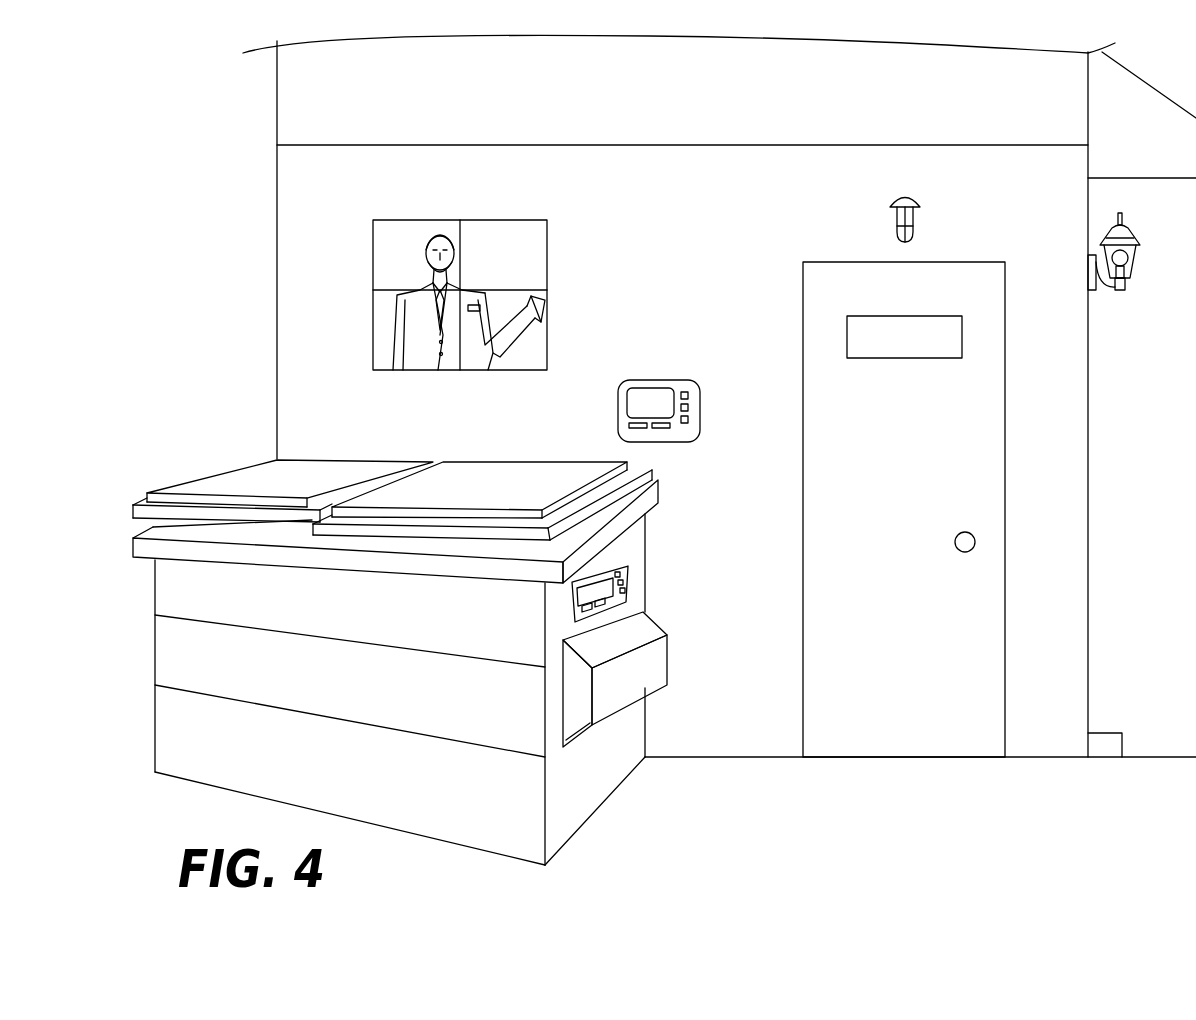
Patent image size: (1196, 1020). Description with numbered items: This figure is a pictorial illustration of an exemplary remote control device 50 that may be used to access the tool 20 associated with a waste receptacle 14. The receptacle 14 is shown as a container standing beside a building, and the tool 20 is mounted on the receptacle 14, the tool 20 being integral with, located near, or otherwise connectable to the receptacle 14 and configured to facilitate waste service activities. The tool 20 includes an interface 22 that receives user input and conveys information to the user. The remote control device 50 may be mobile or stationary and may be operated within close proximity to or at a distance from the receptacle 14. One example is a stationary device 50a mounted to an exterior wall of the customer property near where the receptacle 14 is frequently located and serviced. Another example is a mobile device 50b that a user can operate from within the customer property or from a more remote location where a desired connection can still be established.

The receptacle 14 is at (357, 690).
The tool 20 is at (641, 569).
The interface 22 is at (618, 600).
The remote control device 50 is at (507, 295).
The stationary device 50a is at (701, 381).
The mobile device 50b is at (512, 294).